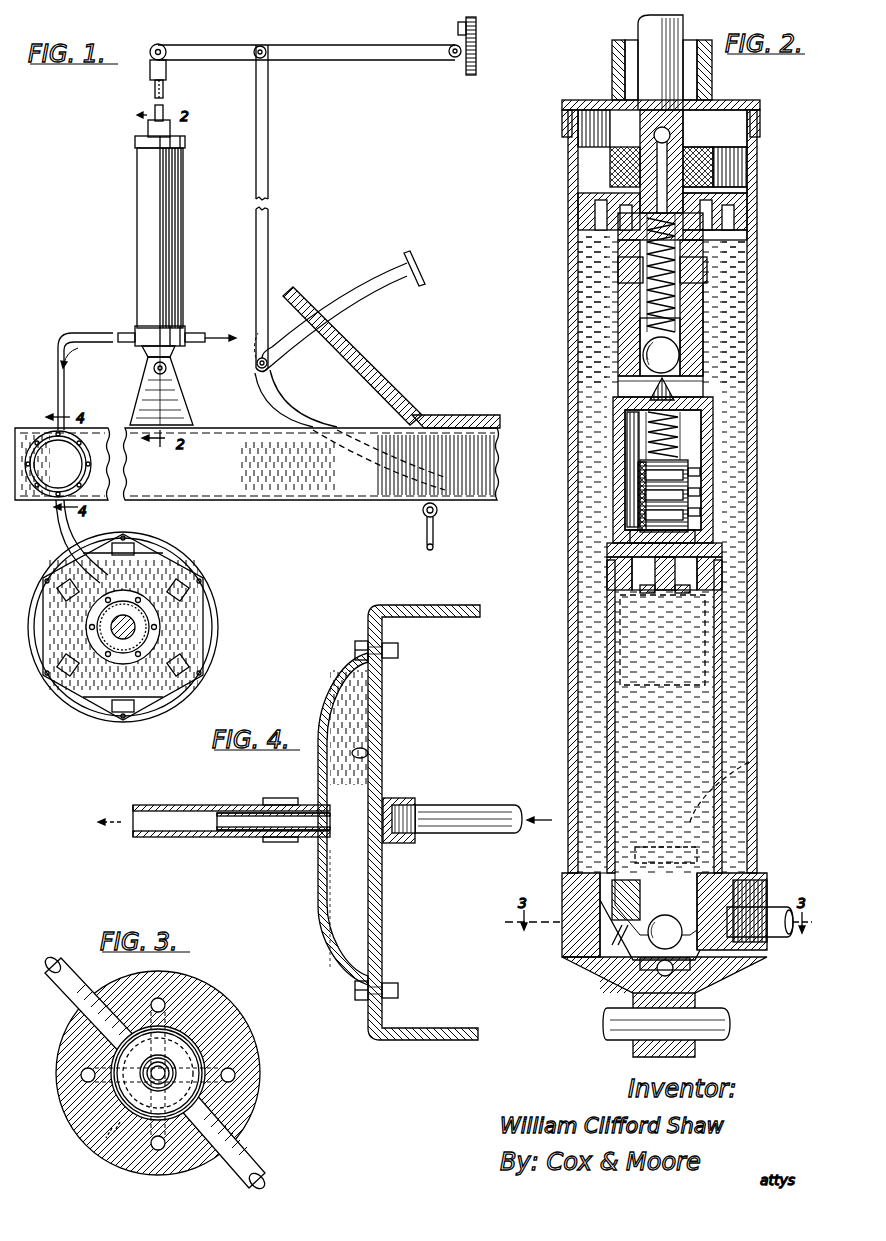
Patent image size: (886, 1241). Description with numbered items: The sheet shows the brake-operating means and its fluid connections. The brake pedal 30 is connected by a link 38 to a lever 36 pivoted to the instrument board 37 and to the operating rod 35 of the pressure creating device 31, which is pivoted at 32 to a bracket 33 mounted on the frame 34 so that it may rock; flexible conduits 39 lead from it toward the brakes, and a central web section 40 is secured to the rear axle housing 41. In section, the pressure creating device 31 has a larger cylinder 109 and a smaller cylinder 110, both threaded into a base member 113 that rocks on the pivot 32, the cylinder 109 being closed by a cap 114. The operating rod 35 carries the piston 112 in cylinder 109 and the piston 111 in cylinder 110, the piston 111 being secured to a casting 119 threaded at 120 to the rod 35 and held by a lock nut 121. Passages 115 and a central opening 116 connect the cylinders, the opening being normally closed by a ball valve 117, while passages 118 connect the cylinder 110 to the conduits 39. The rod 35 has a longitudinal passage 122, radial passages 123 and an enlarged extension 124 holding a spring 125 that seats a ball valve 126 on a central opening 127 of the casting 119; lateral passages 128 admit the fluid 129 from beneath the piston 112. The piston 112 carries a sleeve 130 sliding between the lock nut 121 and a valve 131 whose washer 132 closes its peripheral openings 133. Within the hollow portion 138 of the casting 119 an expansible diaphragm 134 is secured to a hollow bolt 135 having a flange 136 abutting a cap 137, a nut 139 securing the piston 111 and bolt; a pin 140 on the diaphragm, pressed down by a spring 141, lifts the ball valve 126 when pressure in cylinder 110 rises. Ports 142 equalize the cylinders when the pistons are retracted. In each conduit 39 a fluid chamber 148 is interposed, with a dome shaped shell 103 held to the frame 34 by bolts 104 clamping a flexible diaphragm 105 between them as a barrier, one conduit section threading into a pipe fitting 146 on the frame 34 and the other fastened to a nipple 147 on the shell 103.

In FIG. 1, the brake pedal 30 is at (358, 288).
In FIG. 1, the pressure creating device 31 is at (175, 208).
In FIG. 1, the pivot 32 is at (167, 368).
In FIG. 2, the pivot 32 is at (717, 1019).
In FIG. 1, the bracket 33 is at (168, 402).
In FIG. 1, the frame 34 is at (267, 487).
In FIG. 4, the frame 34 is at (455, 610).
In FIG. 1, the operating rod 35 is at (152, 87).
In FIG. 2, the operating rod 35 is at (648, 32).
In FIG. 1, the lever 36 is at (356, 60).
In FIG. 1, the instrument board 37 is at (466, 66).
In FIG. 1, the link 38 is at (268, 159).
In FIG. 1, the flexible conduits 39 is at (197, 330).
In FIG. 4, the flexible conduits 39 is at (147, 838).
In FIG. 3, the flexible conduits 39 is at (73, 997).
In FIG. 2, the flexible conduits 39 is at (780, 907).
In FIG. 1, the central web section 40 is at (173, 602).
In FIG. 1, the rear axle housing 41 is at (147, 635).
In FIG. 1, the dome 103 is at (72, 468).
In FIG. 4, the dome 103 is at (318, 887).
In FIG. 1, the bolt 104 is at (88, 448).
In FIG. 4, the bolt 104 is at (400, 650).
In FIG. 4, the gasket 105 is at (366, 753).
In FIG. 2, the cylinder 109 is at (745, 575).
In FIG. 2, the cylinder 110 is at (718, 712).
In FIG. 2, the piston 111 is at (712, 560).
In FIG. 2, the piston 112 is at (747, 193).
In FIG. 1, the base member 113 is at (143, 330).
In FIG. 3, the base member 113 is at (180, 980).
In FIG. 2, the base member 113 is at (562, 946).
In FIG. 1, the cap 114 is at (135, 140).
In FIG. 2, the cap 114 is at (562, 125).
In FIG. 3, the passages 115 is at (166, 1005).
In FIG. 2, the passages 115 is at (627, 940).
In FIG. 3, the central opening 116 is at (113, 1150).
In FIG. 2, the central opening 116 is at (674, 968).
In FIG. 3, the ball valve 117 is at (177, 1087).
In FIG. 2, the ball valve 117 is at (663, 918).
In FIG. 3, the passages 118 is at (122, 1040).
In FIG. 2, the passages 118 is at (634, 920).
In FIG. 2, the casting 119 is at (707, 404).
In FIG. 2, the thread 120 is at (712, 296).
In FIG. 2, the lock nut 121 is at (703, 256).
In FIG. 2, the longitudinal passage 122 is at (667, 182).
In FIG. 2, the radial passages 123 is at (683, 135).
In FIG. 2, the enlarged extension 124 is at (623, 267).
In FIG. 2, the spring 125 is at (640, 293).
In FIG. 2, the ball valve 126 is at (655, 353).
In FIG. 2, the central opening 127 is at (700, 383).
In FIG. 2, the lateral passages 128 is at (617, 381).
In FIG. 2, the fluid 129 is at (690, 448).
In FIG. 2, the sleeve 130 is at (752, 233).
In FIG. 2, the valve 131 is at (608, 160).
In FIG. 2, the washer 132 is at (612, 180).
In FIG. 2, the openings 133 is at (620, 232).
In FIG. 2, the expansible diaphragm 134 is at (635, 510).
In FIG. 2, the hollow bolt 135 is at (664, 593).
In FIG. 2, the flange 136 is at (713, 543).
In FIG. 2, the cap 137 is at (705, 523).
In FIG. 2, the hollow portion 138 is at (633, 460).
In FIG. 2, the nut 139 is at (748, 625).
In FIG. 2, the pin 140 is at (682, 412).
In FIG. 2, the spring 141 is at (627, 447).
In FIG. 2, the ports 142 is at (572, 606).
In FIG. 4, the pipe fitting 146 is at (395, 843).
In FIG. 4, the nipple 147 is at (257, 831).
In FIG. 4, the fluid chamber 148 is at (348, 883).